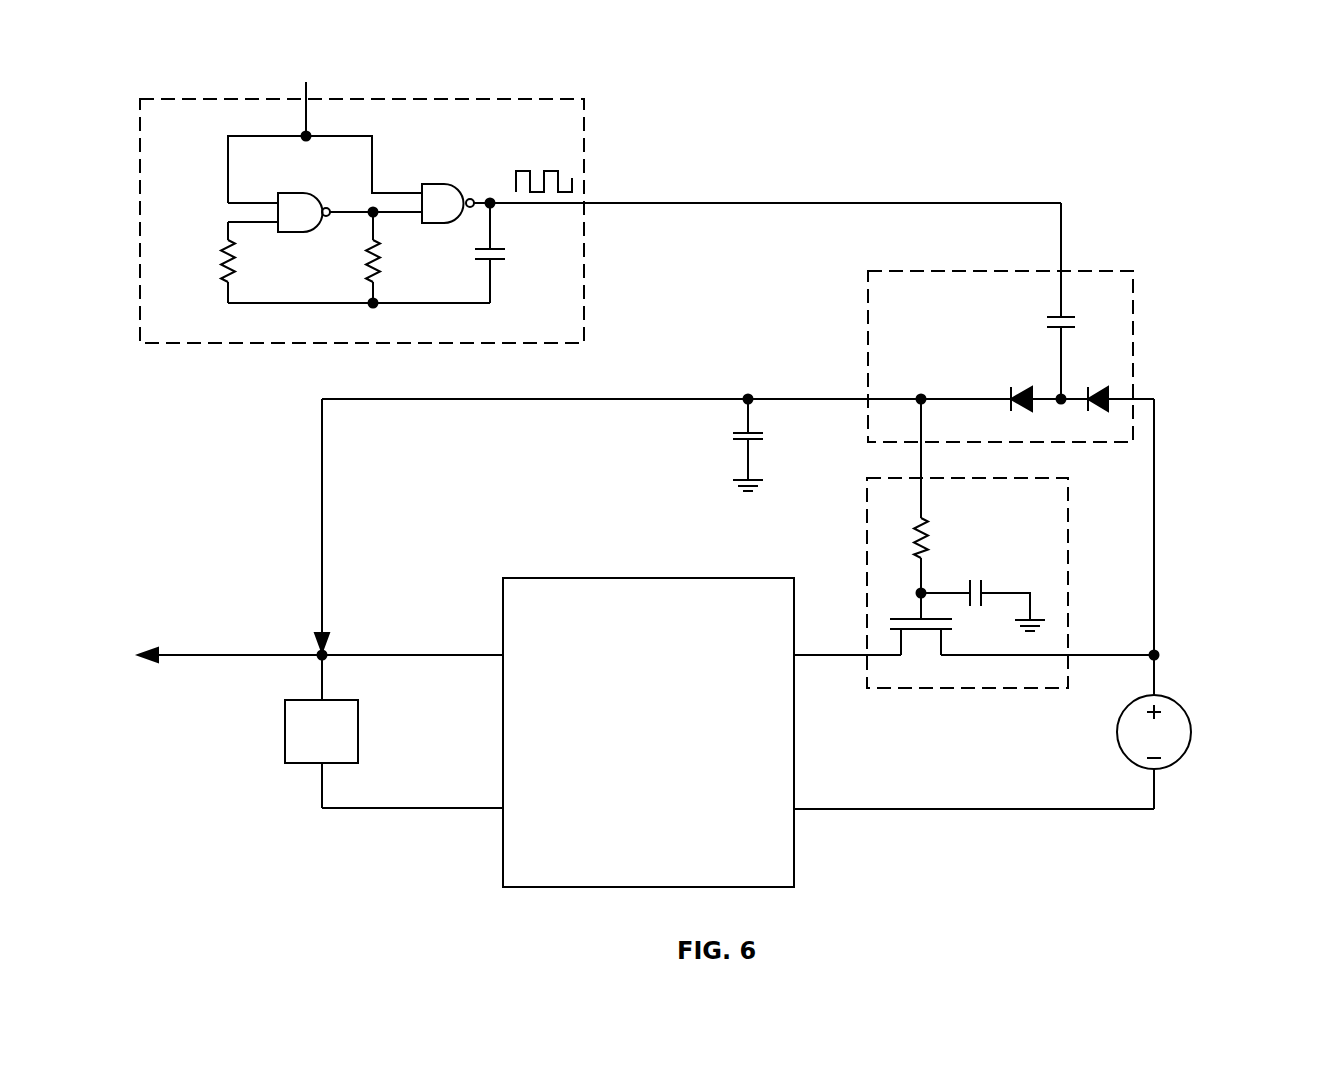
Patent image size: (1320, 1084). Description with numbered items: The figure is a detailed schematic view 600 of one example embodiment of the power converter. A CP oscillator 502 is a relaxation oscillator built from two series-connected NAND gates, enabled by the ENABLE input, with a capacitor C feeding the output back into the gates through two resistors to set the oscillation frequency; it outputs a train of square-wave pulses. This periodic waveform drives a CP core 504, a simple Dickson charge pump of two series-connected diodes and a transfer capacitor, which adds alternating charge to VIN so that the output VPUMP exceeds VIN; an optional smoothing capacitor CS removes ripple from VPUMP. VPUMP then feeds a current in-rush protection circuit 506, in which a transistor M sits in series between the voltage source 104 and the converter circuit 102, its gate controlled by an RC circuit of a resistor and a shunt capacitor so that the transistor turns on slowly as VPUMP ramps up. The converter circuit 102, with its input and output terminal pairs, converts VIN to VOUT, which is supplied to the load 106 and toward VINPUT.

The detailed schematic view 600 is at (1117, 62).
The CP oscillator 502 is at (584, 101).
The CP core 504 is at (1118, 271).
The current in-rush protection circuit 506 is at (867, 548).
The converter circuit 102 is at (503, 578).
The load 106 is at (358, 740).
The voltage source 104 is at (1191, 732).